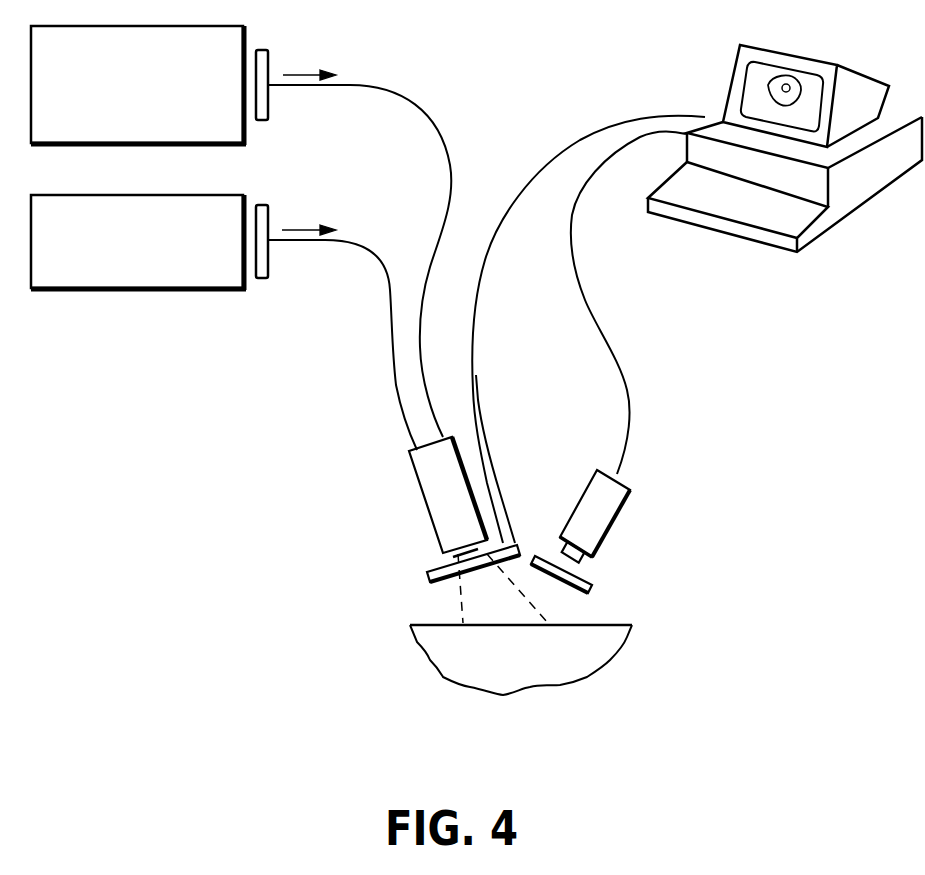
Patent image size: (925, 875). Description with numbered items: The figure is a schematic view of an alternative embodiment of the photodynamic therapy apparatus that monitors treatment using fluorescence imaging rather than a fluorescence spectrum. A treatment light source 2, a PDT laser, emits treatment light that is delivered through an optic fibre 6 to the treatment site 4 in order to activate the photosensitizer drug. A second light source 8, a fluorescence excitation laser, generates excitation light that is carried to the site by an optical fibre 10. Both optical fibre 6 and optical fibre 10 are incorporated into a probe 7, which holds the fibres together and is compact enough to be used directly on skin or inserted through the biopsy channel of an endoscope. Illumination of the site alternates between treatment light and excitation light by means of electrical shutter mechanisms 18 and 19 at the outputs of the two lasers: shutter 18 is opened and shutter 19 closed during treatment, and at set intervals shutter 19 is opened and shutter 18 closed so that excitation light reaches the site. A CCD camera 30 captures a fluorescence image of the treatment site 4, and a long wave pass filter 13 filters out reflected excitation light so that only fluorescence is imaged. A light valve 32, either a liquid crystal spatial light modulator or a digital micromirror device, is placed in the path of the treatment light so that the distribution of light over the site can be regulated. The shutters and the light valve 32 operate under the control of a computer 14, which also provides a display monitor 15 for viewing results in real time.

The light source 2 is at (108, 292).
The treatment site 4 is at (603, 641).
The optic fibre 6 is at (389, 348).
The probe 7 is at (418, 480).
The light source 8 is at (110, 147).
The optical fibre 10 is at (437, 132).
The long wave pass filter 13 is at (598, 587).
The computer 14 is at (770, 243).
The display monitor 15 is at (732, 65).
The electrical shutter mechanism 18 is at (268, 259).
The electrical shutter mechanism 19 is at (268, 104).
The CCD camera 30 is at (611, 506).
The light valve 32 is at (427, 577).